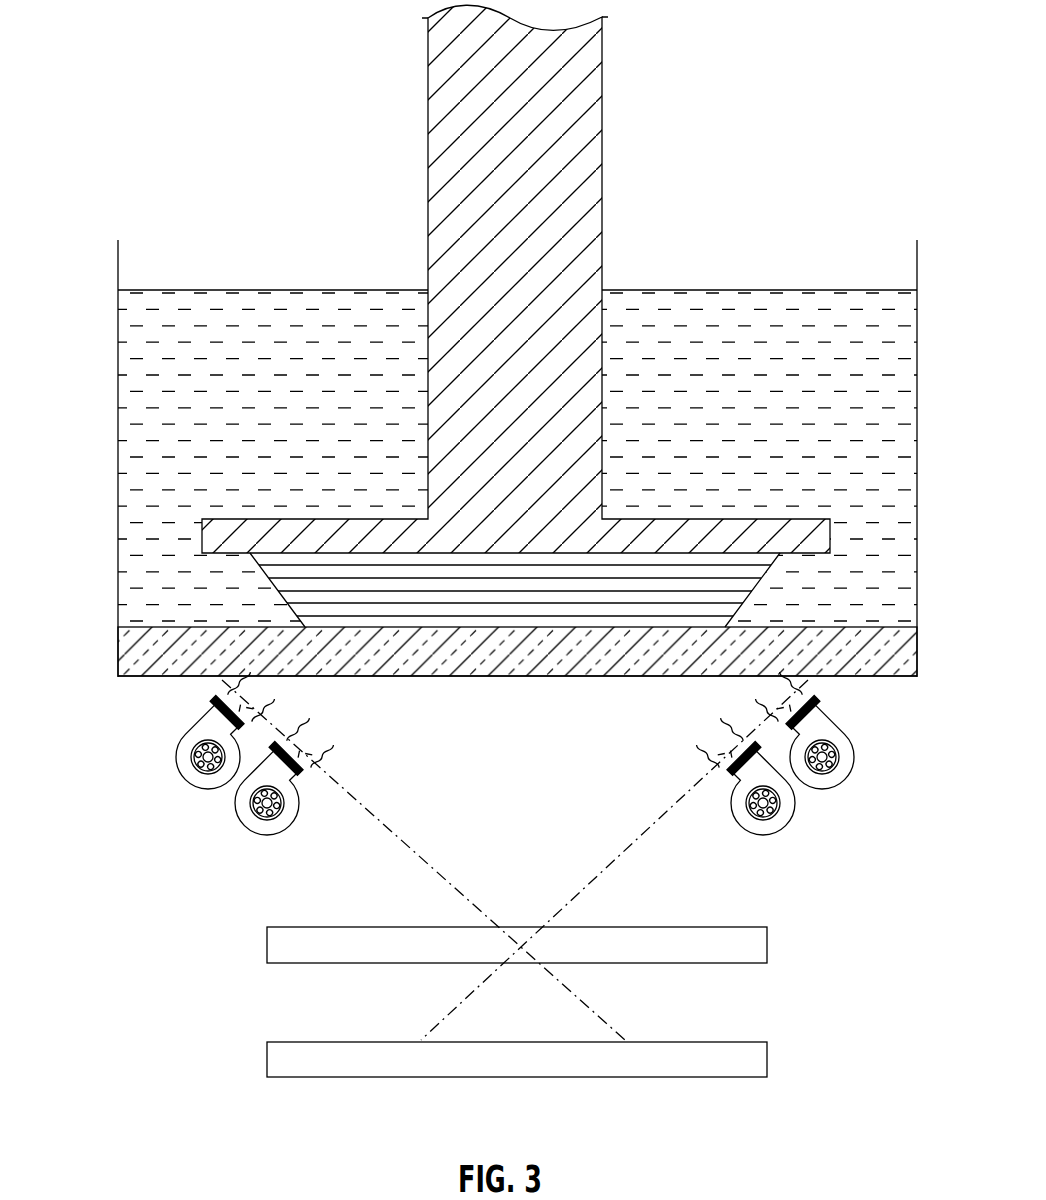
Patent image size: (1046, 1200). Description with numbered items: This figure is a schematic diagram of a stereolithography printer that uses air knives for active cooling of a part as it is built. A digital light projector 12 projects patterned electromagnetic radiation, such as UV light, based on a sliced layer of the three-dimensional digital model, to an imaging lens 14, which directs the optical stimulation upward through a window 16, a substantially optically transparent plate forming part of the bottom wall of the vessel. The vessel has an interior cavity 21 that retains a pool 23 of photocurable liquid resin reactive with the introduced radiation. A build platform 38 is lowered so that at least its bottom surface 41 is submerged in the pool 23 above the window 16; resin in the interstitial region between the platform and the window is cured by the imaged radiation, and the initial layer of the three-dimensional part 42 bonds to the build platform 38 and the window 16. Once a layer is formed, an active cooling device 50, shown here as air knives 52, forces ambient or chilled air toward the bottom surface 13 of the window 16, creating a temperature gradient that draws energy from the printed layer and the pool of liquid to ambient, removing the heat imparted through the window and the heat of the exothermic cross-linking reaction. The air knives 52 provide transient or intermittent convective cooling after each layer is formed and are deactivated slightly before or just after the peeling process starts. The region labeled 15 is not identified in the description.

The digital light projector 12 is at (767, 1055).
The bottom surface of the window 13 is at (143, 677).
The imaging lens 14 is at (767, 940).
The liquid level 15 is at (140, 626).
The window 16 is at (130, 657).
The interior cavity 21 is at (118, 405).
The pool 23 is at (133, 338).
The build platform 38 is at (820, 525).
The bottom surface of the build platform 41 is at (792, 555).
The 3D part 42 is at (531, 620).
The active cooling device 50 is at (152, 898).
The air knives 52 is at (196, 770).